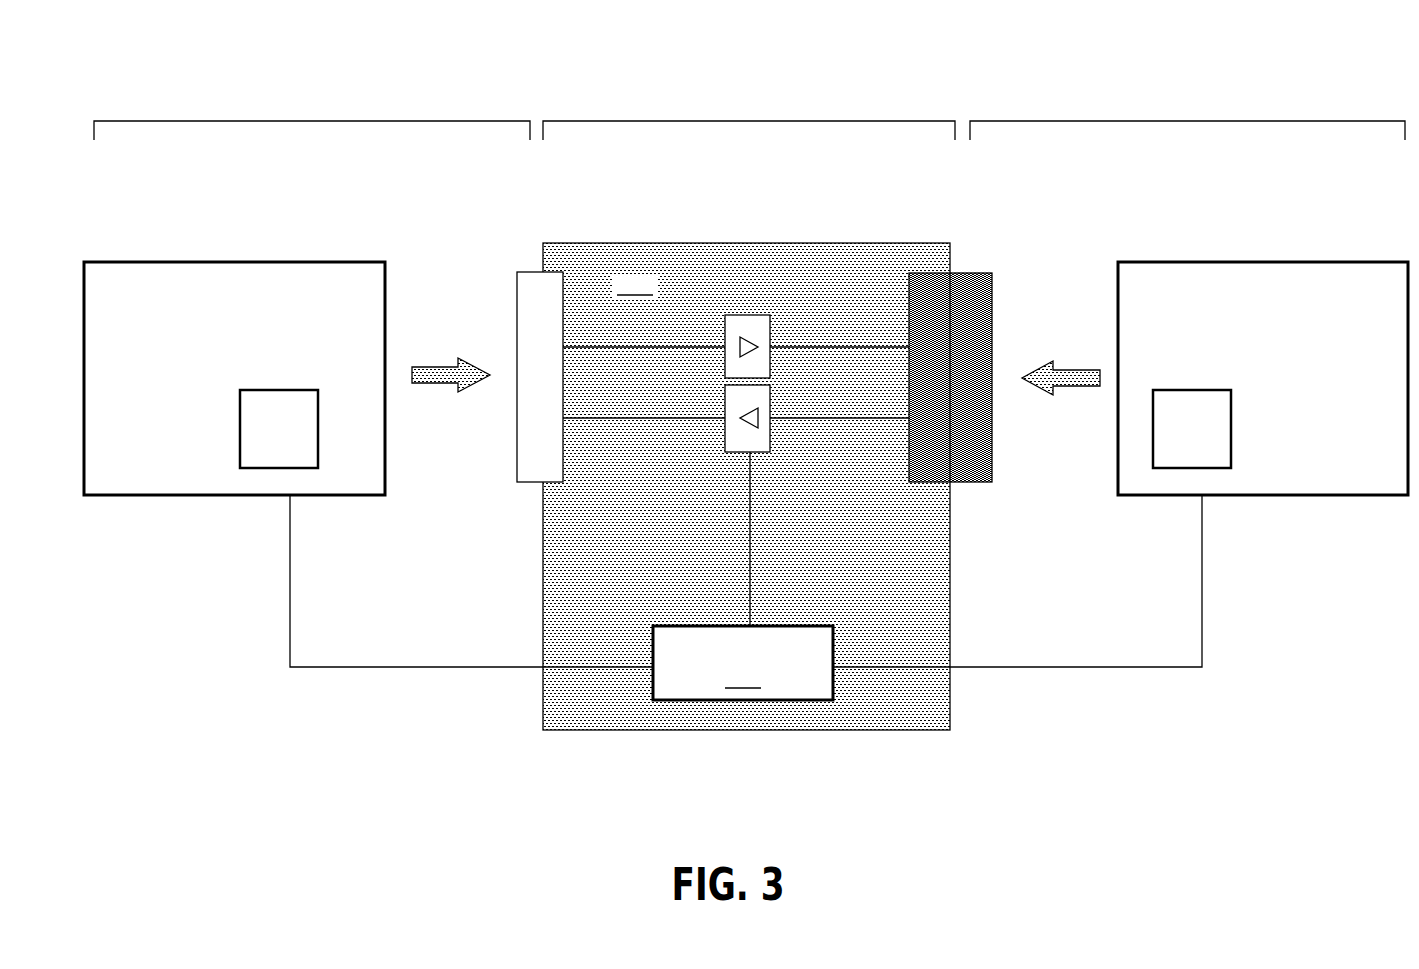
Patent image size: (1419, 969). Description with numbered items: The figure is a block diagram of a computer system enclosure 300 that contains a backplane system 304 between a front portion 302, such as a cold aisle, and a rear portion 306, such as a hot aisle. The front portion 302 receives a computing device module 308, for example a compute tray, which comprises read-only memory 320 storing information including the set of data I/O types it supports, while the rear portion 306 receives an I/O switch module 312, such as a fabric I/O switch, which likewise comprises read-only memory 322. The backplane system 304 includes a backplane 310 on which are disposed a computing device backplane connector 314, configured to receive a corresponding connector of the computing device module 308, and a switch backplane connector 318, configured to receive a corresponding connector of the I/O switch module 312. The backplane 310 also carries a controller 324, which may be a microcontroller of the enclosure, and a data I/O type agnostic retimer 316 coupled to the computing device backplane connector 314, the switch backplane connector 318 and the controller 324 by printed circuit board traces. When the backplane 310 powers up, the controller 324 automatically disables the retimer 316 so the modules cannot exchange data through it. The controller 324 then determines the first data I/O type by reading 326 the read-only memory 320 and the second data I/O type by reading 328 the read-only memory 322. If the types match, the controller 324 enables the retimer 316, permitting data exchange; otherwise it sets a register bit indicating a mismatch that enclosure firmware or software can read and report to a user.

The computer system enclosure 300 is at (172, 41).
The front portion 302 is at (309, 121).
The backplane system 304 is at (749, 121).
The rear portion 306 is at (1183, 121).
The computing device module 308 is at (217, 343).
The backplane 310 is at (617, 295).
The I/O switch module 312 is at (1245, 343).
The computing device backplane connector 314 is at (516, 271).
The retimer 316 is at (739, 313).
The switch backplane connector 318 is at (996, 272).
The read-only memory 320 is at (261, 456).
The read-only memory 322 is at (1174, 456).
The controller 324 is at (725, 688).
The reading of ROM 320 326 is at (586, 669).
The reading of ROM 322 328 is at (901, 669).